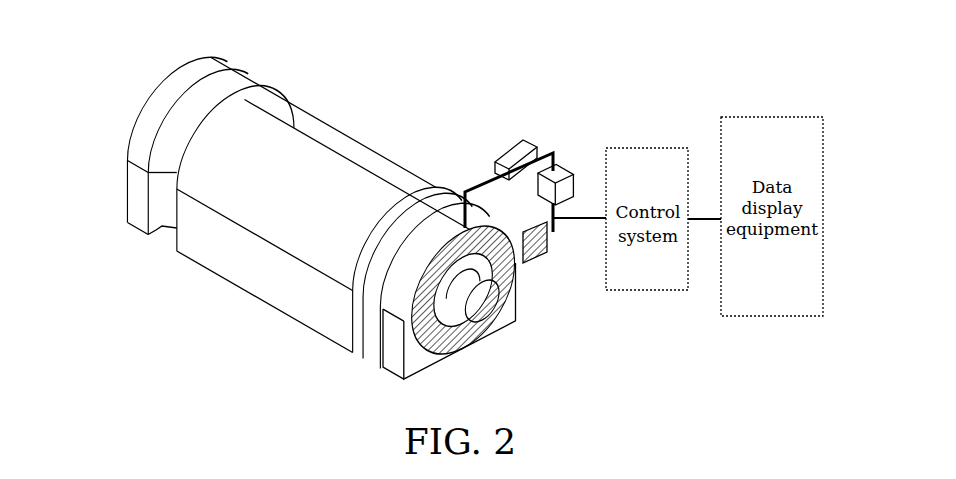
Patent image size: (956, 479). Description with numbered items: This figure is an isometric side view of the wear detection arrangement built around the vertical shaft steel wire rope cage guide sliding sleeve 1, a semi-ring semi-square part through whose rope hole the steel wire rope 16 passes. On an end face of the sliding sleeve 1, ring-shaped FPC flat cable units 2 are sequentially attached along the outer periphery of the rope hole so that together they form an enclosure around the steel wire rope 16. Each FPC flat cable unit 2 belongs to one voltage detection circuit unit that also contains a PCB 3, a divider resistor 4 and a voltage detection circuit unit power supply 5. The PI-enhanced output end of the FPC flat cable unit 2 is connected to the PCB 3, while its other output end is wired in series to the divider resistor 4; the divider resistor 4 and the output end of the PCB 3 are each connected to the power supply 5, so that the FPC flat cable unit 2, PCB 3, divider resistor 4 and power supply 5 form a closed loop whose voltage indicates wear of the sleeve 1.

The vertical shaft steel wire rope cage guide sliding sleeve 1 is at (320, 235).
The FPC flat cable unit 2 is at (428, 266).
The PCB 3 is at (452, 208).
The divider resistor 4 is at (495, 162).
The voltage detection circuit unit power supply 5 is at (523, 141).
The steel wire rope 16 is at (458, 306).